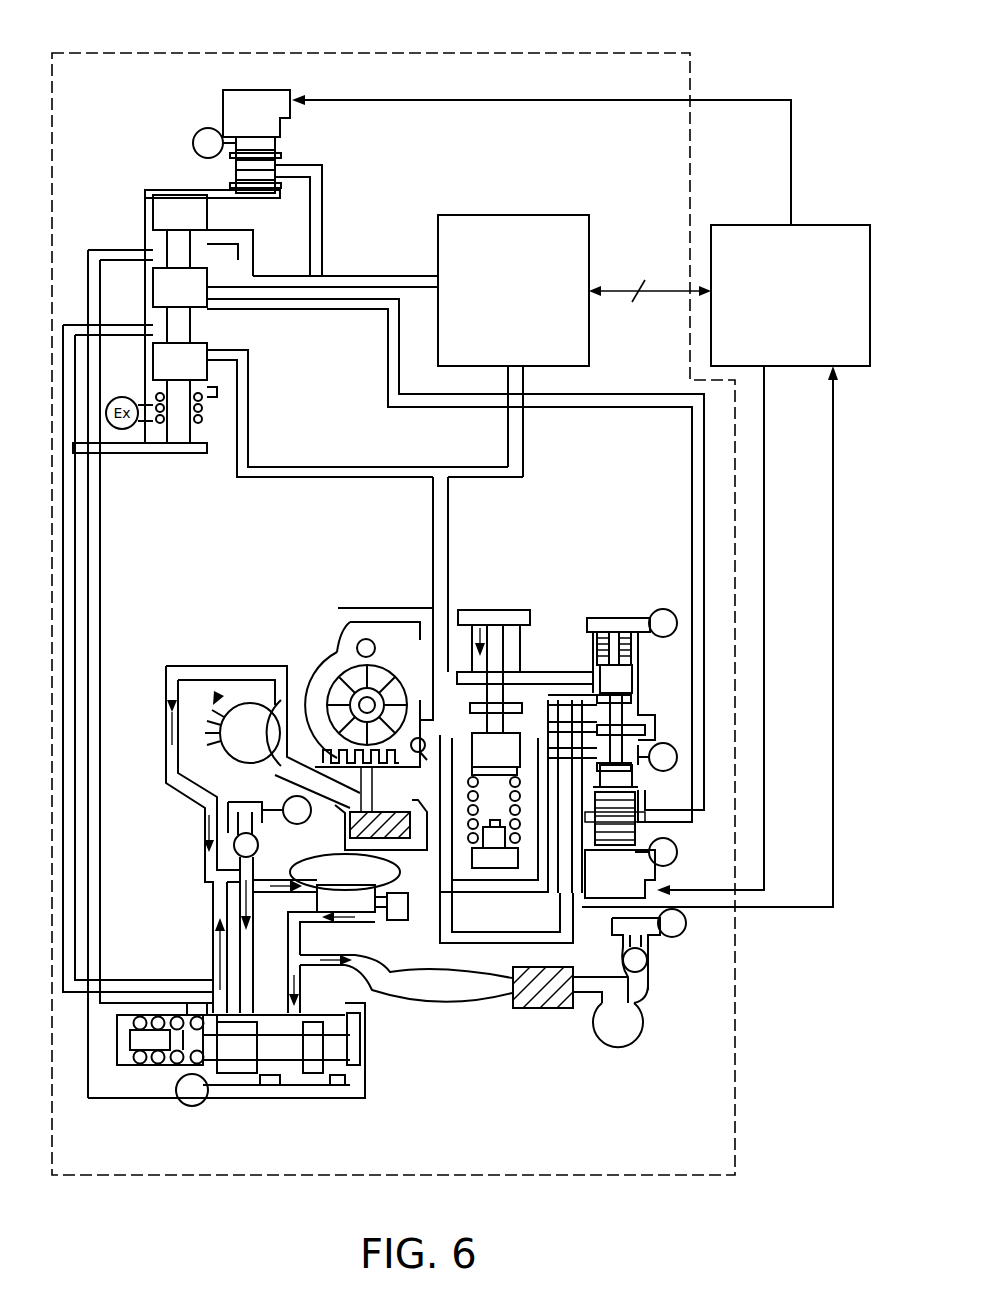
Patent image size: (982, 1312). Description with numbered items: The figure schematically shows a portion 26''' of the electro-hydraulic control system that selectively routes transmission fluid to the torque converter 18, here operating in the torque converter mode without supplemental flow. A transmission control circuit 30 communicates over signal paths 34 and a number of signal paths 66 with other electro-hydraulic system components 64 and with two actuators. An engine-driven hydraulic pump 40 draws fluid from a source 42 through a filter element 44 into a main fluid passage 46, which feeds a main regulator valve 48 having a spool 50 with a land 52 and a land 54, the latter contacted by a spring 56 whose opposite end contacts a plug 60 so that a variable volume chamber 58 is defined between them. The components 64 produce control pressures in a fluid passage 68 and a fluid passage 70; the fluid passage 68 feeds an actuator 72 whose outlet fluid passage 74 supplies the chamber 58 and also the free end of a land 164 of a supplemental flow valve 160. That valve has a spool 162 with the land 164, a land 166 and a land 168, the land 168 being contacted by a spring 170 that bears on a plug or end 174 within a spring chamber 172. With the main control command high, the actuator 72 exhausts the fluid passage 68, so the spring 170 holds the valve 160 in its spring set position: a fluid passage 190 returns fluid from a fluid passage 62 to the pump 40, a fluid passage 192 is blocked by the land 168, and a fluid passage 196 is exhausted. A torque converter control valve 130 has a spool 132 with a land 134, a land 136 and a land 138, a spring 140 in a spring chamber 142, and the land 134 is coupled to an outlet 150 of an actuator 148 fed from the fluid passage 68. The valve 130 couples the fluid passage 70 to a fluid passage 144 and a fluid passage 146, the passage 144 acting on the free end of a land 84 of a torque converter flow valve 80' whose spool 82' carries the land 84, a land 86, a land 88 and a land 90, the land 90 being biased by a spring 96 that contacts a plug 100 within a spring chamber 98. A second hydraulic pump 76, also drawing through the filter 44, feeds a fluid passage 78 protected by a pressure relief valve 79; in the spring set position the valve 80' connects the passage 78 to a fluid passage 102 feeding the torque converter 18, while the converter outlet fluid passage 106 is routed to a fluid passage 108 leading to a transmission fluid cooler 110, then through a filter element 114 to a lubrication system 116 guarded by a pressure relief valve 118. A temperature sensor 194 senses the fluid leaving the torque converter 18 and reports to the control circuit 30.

The electro-hydraulic control system portion 26''' is at (393, 588).
The transmission control circuit 30 is at (822, 225).
The signal path 34 is at (785, 530).
The other electro-hydraulic system components 64 is at (545, 215).
The signal paths 66 is at (652, 296).
The fluid passage 68 is at (372, 276).
The fluid passage 70 is at (346, 310).
The actuator 148 is at (222, 100).
The outlet 150 is at (252, 197).
The torque converter control valve 130 is at (174, 151).
The spool 132 is at (176, 185).
The land 134 is at (164, 225).
The land 136 is at (164, 300).
The land 138 is at (164, 374).
The fluid passage 144 is at (100, 250).
The fluid passage 146 is at (75, 497).
The spring chamber 142 is at (200, 388).
The spring 140 is at (198, 427).
The main fluid passage 46 is at (362, 608).
The hydraulic pump 40 is at (332, 660).
The spring 56 is at (470, 782).
The filter element 44 is at (384, 812).
The source of transmission fluid 42 is at (427, 810).
The fluid passage 78 is at (193, 666).
The hydraulic pump 76 is at (252, 690).
The pressure relief valve 79 is at (262, 838).
The fluid passage 102 is at (215, 907).
The torque converter 18 is at (333, 884).
The fluid passage 106 is at (380, 897).
The temperature sensor 194 is at (410, 914).
The fluid passage 108 is at (370, 1000).
The transmission fluid cooler 110 is at (418, 997).
The filter element 114 is at (548, 1010).
The lubrication system 116 is at (612, 1045).
The fluid passage 190 is at (580, 910).
The pressure relief valve 118 is at (655, 947).
The torque converter flow valve 80' is at (226, 1089).
The spool 82' is at (331, 1049).
The plug 100 is at (117, 1065).
The spring 96 is at (160, 1065).
The spring chamber 98 is at (183, 1038).
The land 90 is at (212, 1013).
The land 88 is at (255, 1073).
The land 86 is at (305, 1073).
The land 84 is at (352, 1065).
The spool 50 is at (475, 622).
The main regulator valve 48 is at (516, 630).
The land 52 is at (530, 622).
The fluid passage 62 is at (523, 648).
The fluid passage 196 is at (583, 732).
The land 54 is at (484, 762).
The plug 60 is at (496, 870).
The variable volume chamber 58 is at (493, 810).
The fluid passage 192 is at (540, 915).
The supplemental flow valve 160 is at (632, 630).
The spring chamber 172 is at (610, 618).
The plug or end 174 is at (638, 616).
The spring 170 is at (632, 650).
The land 168 is at (632, 685).
The land 166 is at (640, 730).
The land 164 is at (625, 772).
The spool 162 is at (702, 798).
The fluid passage 74 is at (640, 800).
The actuator 72 is at (656, 880).